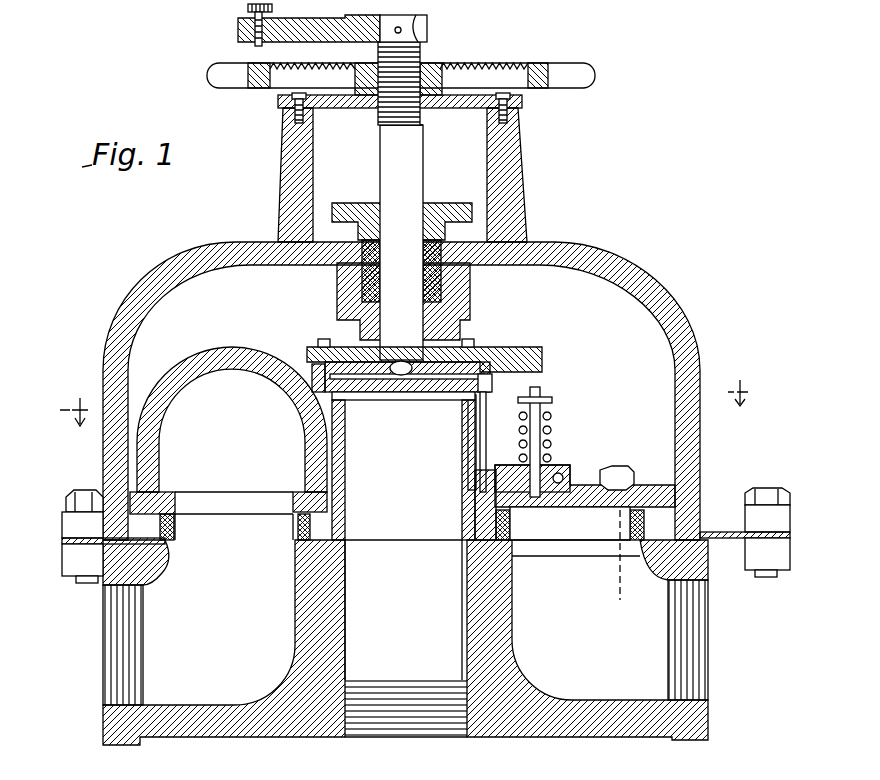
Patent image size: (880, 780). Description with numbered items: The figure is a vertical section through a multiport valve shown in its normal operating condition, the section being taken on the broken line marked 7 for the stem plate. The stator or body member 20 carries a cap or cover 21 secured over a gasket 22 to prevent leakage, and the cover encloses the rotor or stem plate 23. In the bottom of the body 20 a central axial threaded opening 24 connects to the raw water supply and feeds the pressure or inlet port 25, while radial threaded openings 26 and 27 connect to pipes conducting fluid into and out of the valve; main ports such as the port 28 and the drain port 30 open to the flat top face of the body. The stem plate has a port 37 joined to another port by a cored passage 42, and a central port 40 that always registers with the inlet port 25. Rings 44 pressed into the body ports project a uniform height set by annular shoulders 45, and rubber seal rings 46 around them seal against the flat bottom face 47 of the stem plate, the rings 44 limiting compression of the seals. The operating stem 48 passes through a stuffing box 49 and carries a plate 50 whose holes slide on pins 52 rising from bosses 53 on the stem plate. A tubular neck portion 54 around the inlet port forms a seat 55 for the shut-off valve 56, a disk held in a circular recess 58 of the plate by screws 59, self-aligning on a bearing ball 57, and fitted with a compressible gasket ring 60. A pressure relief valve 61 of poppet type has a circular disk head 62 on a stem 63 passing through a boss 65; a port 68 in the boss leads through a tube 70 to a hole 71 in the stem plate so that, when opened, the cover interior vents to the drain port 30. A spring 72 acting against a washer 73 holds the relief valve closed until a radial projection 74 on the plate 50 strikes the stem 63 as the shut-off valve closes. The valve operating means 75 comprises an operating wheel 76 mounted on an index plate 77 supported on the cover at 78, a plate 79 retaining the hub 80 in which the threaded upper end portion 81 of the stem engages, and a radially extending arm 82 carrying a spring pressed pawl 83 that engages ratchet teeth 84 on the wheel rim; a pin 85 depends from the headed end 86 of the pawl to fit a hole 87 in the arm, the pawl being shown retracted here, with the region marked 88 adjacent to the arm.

The section line 7 is at (409, 401).
The stator or body member 20 is at (700, 712).
The cap or cover 21 is at (700, 432).
The gasket 22 is at (104, 546).
The rotor or stem plate 23 is at (640, 490).
The central axial threaded opening 24 is at (425, 722).
The pressure or inlet port 25 is at (470, 433).
The radial threaded opening 26 is at (118, 684).
The radial threaded opening 27 is at (700, 645).
The main port 28 is at (234, 549).
The drain port 30 is at (576, 568).
The stem plate port 37 is at (218, 492).
The central port 40 is at (478, 480).
The cored passage 42 is at (232, 372).
The ring 44 is at (176, 526).
The annular shoulder 45 is at (168, 572).
The rubber seal ring 46 is at (496, 536).
The flat bottom face 47 is at (82, 522).
The operating stem 48 is at (412, 178).
The stuffing box 49 is at (357, 206).
The plate 50 is at (316, 343).
The pin 52 is at (470, 340).
The boss 53 is at (484, 422).
The tubular neck portion 54 is at (346, 458).
The seat 55 is at (362, 402).
The shut-off valve 56 is at (418, 400).
The bearing ball 57 is at (402, 358).
The circular recess 58 is at (482, 352).
The screw 59 is at (492, 383).
The compressible gasket ring 60 is at (320, 392).
The pressure relief valve 61 is at (558, 508).
The circular disk head 62 is at (536, 515).
The stem 63 is at (541, 392).
The boss 65 is at (558, 466).
The port 68 is at (580, 470).
The tube 70 is at (615, 476).
The hole 71 is at (617, 555).
The spring 72 is at (552, 432).
The washer 73 is at (552, 402).
The radial projection 74 is at (545, 358).
The valve operating means 75 is at (548, 93).
The operating wheel 76 is at (260, 89).
The index plate 77 is at (471, 110).
The support 78 is at (526, 180).
The plate 79 is at (350, 108).
The hub 80 is at (432, 70).
The threaded upper end portion 81 is at (392, 120).
The radially extending arm 82 is at (383, 18).
The spring pressed pawl 83 is at (274, 13).
The ratchet teeth 84 is at (506, 68).
The pin 85 is at (254, 26).
The headed end 86 is at (250, 7).
The hole 87 is at (290, 40).
The arm end 88 is at (252, 44).